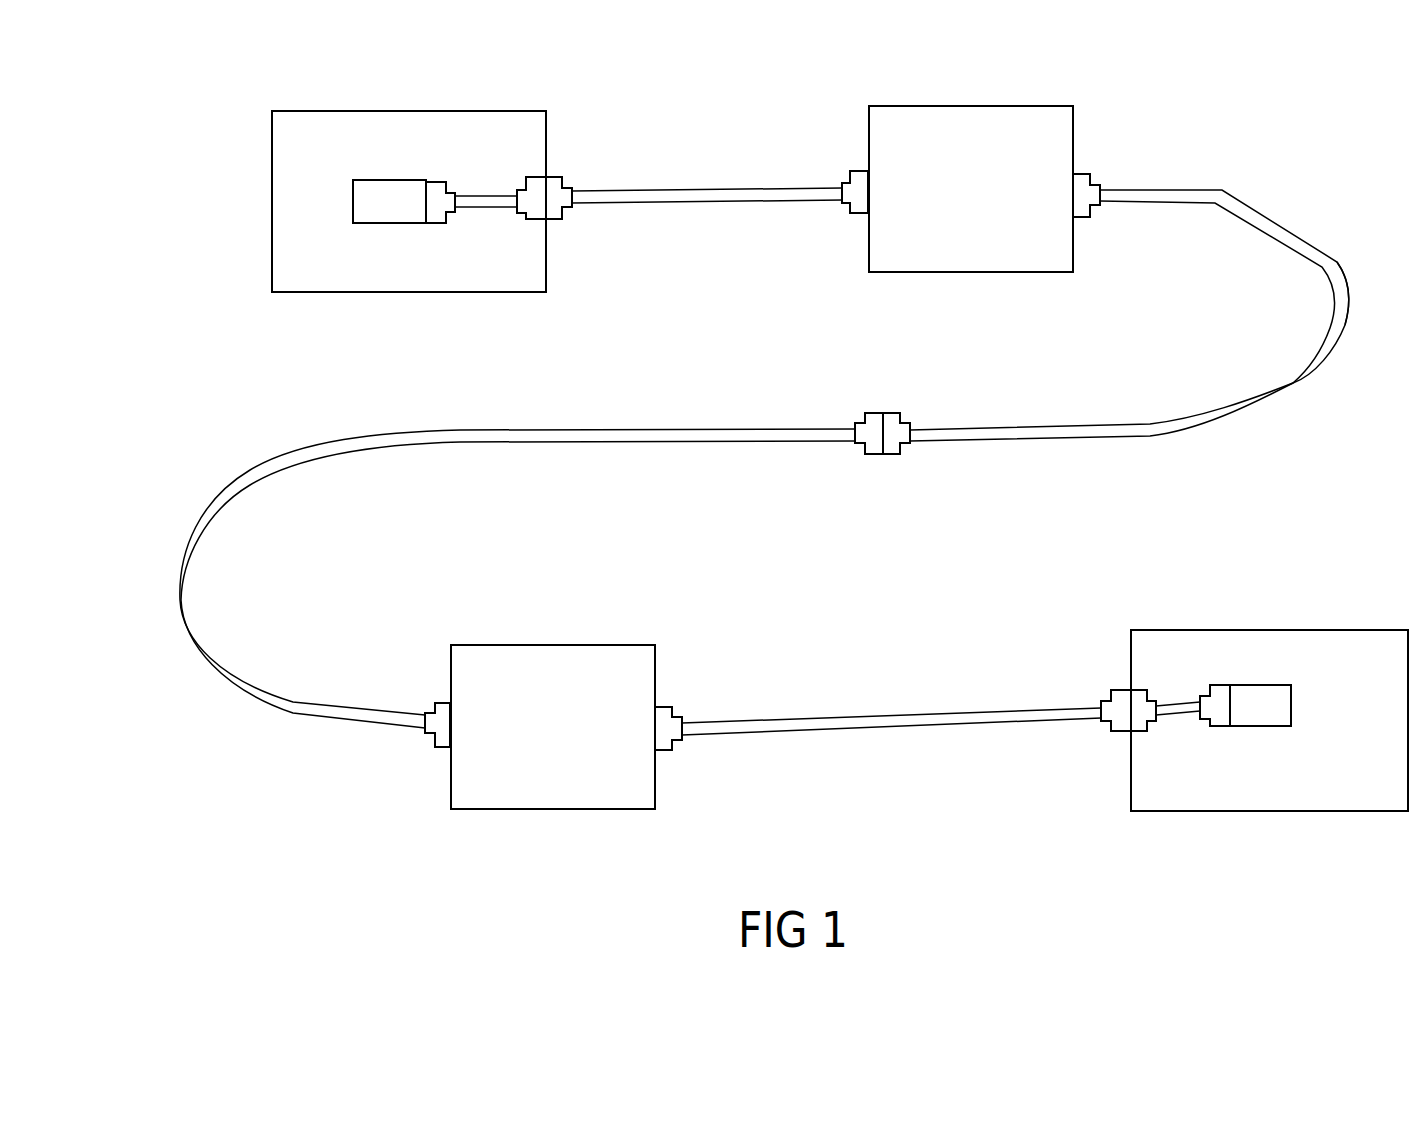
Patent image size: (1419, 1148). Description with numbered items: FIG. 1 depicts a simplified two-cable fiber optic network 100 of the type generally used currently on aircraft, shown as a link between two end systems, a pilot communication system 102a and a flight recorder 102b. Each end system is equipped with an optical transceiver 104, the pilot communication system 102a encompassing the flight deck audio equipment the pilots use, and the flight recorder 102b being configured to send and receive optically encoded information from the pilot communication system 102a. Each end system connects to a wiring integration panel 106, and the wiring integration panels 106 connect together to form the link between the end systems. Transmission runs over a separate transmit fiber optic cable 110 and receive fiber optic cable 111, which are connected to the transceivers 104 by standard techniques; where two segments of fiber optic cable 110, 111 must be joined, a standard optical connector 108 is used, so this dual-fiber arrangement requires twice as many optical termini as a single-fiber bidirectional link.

The two-cable fiber optic network 100 is at (1172, 889).
The pilot communication system 102a is at (409, 201).
The flight recorder 102b is at (1269, 720).
The optical transceiver 104 is at (385, 233).
The wiring integration panel 106 is at (762, 457).
The optical connector 108 is at (446, 173).
The transmit fiber optic cable 110 is at (1373, 293).
The receive fiber optic cable 111 is at (1307, 262).